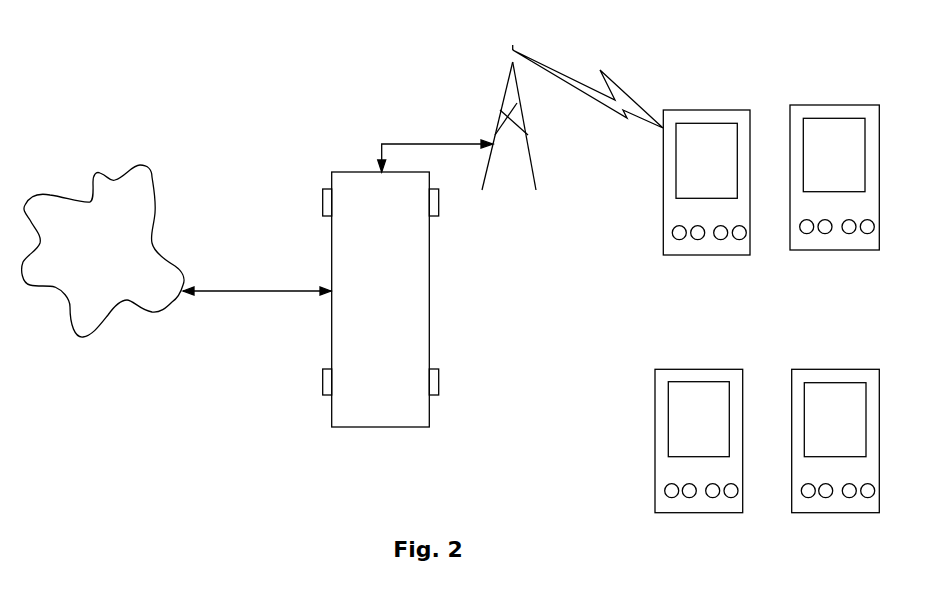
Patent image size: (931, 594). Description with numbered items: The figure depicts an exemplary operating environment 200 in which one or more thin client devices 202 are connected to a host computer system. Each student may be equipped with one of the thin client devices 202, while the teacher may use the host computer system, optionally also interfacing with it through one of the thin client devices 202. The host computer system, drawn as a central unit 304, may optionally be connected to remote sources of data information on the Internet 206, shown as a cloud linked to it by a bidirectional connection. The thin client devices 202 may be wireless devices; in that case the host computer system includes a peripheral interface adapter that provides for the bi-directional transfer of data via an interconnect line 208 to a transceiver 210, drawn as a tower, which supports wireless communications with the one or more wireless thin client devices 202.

The operating environment 200 is at (325, 80).
The thin client devices 202 is at (743, 110).
The Internet 206 is at (152, 175).
The interconnect line 208 is at (403, 143).
The transceiver 210 is at (508, 90).
The server 304 is at (404, 428).